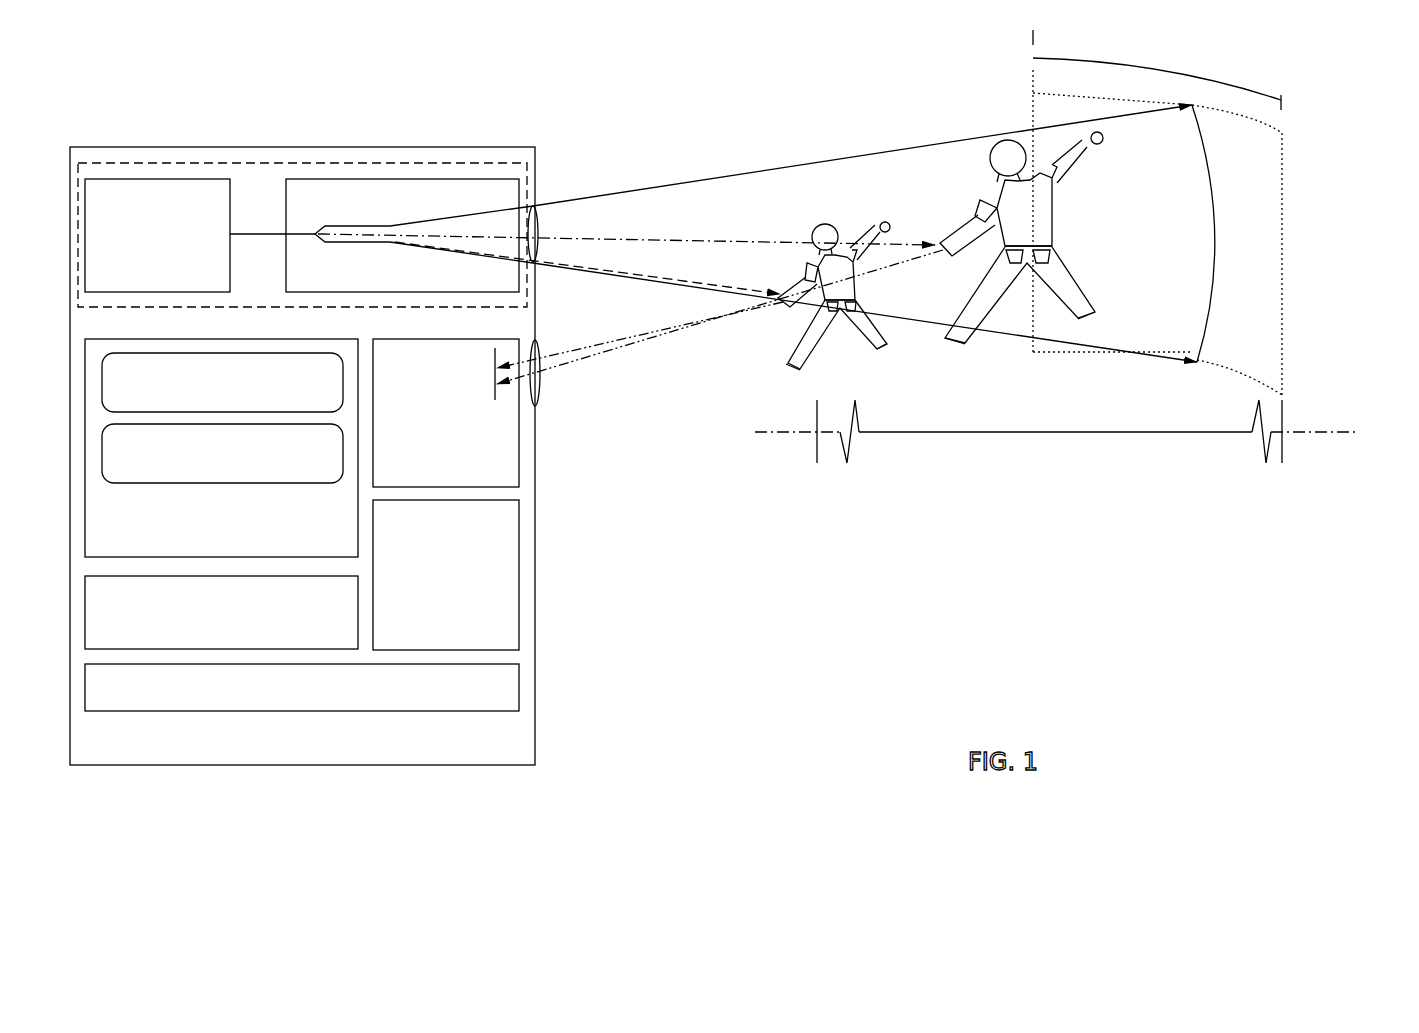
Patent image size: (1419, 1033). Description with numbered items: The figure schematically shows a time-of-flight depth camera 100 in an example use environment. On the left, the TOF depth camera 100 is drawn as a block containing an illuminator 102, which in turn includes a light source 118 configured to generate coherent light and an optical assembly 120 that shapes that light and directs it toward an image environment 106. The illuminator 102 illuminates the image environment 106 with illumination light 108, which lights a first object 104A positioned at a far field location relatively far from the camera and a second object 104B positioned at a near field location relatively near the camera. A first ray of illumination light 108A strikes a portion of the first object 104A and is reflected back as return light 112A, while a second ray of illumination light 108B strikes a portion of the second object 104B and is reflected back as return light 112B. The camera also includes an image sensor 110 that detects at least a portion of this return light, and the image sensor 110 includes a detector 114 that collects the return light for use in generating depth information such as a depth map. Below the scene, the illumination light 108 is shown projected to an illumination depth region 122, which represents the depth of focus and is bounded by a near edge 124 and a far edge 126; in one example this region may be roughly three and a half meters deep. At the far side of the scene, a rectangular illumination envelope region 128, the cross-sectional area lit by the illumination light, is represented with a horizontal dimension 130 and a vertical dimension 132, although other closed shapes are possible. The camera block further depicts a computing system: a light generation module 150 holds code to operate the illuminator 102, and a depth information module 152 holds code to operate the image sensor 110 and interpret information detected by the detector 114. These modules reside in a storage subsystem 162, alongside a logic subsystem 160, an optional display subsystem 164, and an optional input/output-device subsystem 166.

The TOF depth camera 100 is at (302, 456).
The illuminator 102 is at (305, 160).
The first object 104A is at (1063, 186).
The second object 104B is at (822, 227).
The image environment 106 is at (978, 55).
The illumination light 108 is at (738, 168).
The first ray of illumination light 108A is at (902, 243).
The second ray of illumination light 108B is at (752, 291).
The image sensor 110 is at (446, 413).
The return light 112A is at (878, 270).
The return light 112B is at (730, 317).
The detector 114 is at (494, 360).
The light source 118 is at (200, 235).
The optical assembly 120 is at (413, 292).
The illumination depth region 122 is at (1020, 440).
The near edge 124 is at (817, 480).
The far edge 126 is at (1282, 480).
The illumination envelope region 128 is at (1293, 240).
The horizontal dimension 130 is at (1178, 58).
The vertical dimension 132 is at (1230, 206).
The light generation module 150 is at (222, 382).
The depth information module 152 is at (222, 453).
The logic subsystem 160 is at (446, 575).
The storage subsystem 162 is at (221, 448).
The display subsystem 164 is at (221, 612).
The input/output-device subsystem 166 is at (302, 687).